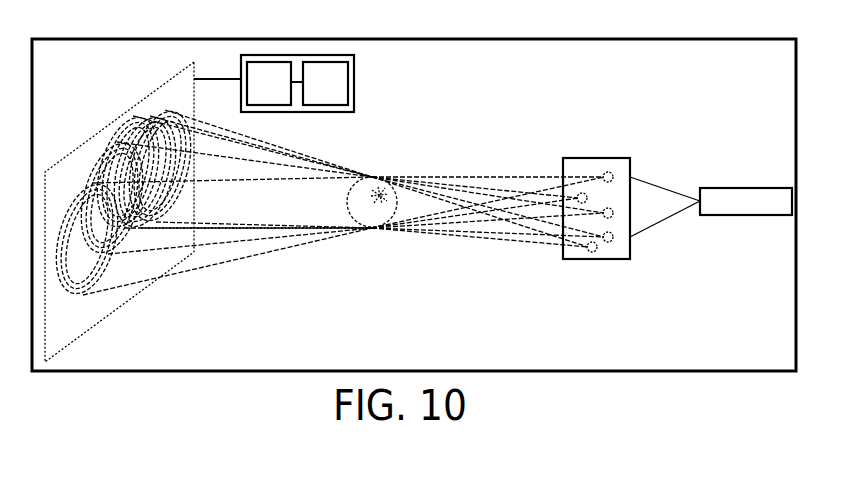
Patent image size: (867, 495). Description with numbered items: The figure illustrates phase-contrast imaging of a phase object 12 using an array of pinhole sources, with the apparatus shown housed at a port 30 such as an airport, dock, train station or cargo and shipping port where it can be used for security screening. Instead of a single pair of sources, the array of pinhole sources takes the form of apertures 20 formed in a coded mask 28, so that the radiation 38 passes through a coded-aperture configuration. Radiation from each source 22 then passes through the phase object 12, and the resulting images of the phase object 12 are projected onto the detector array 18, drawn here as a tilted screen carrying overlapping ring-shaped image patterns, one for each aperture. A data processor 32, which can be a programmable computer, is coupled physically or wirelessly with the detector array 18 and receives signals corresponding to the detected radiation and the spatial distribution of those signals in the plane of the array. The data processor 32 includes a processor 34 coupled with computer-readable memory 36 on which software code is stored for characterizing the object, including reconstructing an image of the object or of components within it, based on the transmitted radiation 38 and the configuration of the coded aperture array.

The phase object 12 is at (372, 177).
The detector array 18 is at (63, 158).
The apertures 20 is at (593, 252).
The pinhole source 22 is at (737, 200).
The coded mask 28 is at (592, 164).
The port 30 is at (748, 73).
The data processor 32 is at (300, 83).
The processor 34 is at (257, 94).
The computer-readable memory 36 is at (314, 94).
The radiation 38 is at (528, 183).